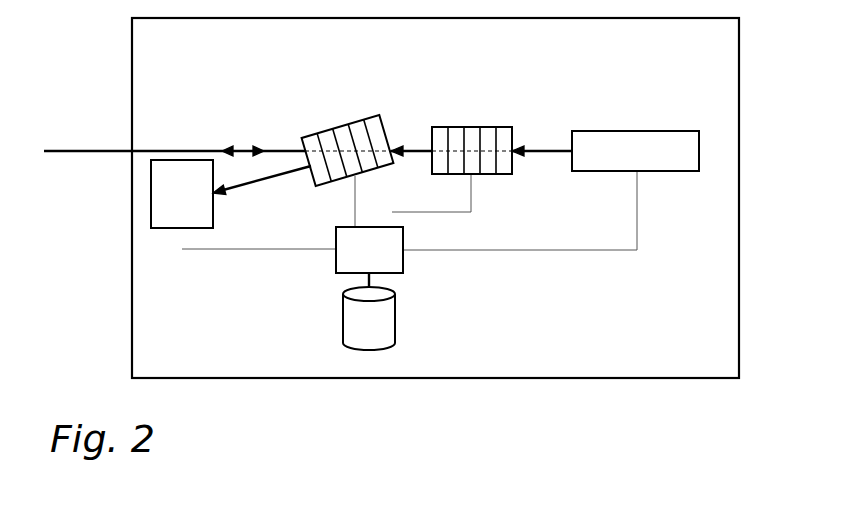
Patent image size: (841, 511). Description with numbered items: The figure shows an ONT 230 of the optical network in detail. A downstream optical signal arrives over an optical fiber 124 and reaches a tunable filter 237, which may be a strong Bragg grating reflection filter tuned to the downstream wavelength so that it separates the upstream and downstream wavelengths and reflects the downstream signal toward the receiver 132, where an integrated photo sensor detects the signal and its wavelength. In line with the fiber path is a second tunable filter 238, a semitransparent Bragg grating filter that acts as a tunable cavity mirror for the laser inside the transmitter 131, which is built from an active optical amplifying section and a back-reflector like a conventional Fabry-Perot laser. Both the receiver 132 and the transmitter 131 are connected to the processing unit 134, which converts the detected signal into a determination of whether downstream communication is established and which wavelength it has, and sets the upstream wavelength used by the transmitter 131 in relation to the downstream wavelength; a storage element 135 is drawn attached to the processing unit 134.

The ONT 230 is at (666, 53).
The optical fiber 124 is at (92, 153).
The tunable filter 237 is at (313, 138).
The second tunable filter 238 is at (502, 126).
The transmitter 131 is at (632, 163).
The receiver 132 is at (164, 192).
The processing unit 134 is at (351, 261).
The memory / storage 135 is at (351, 333).